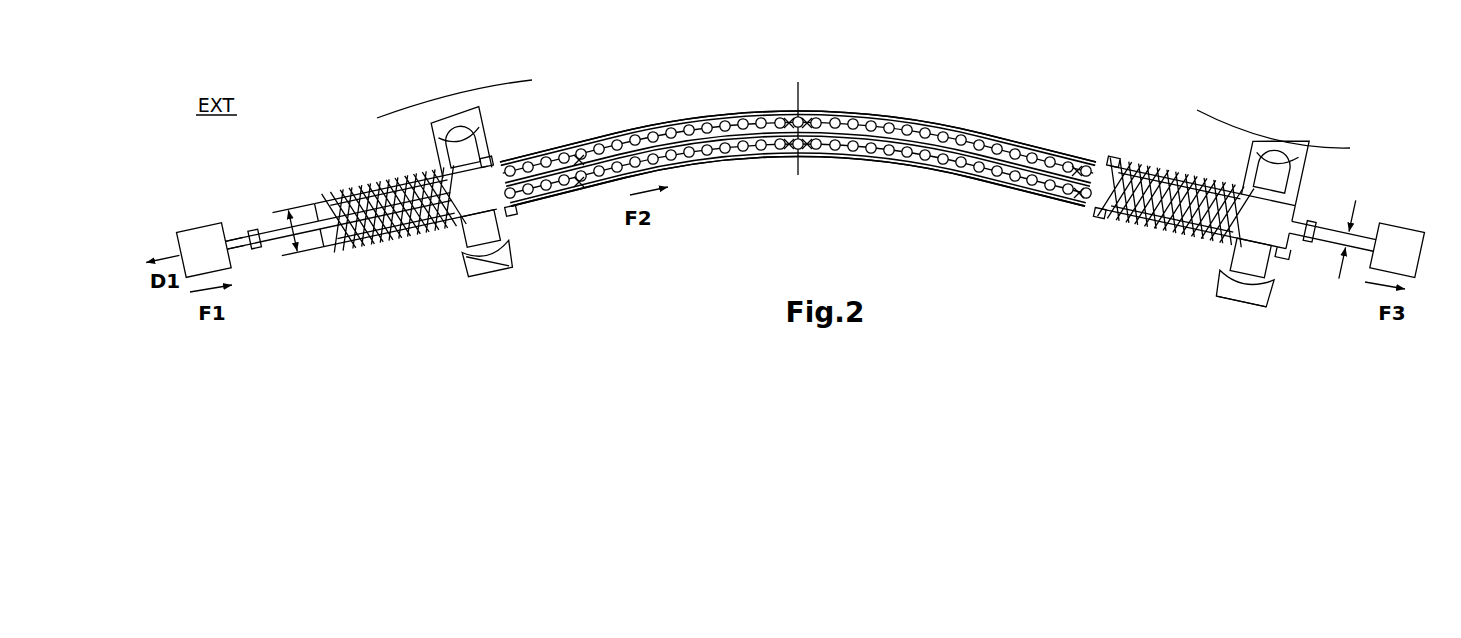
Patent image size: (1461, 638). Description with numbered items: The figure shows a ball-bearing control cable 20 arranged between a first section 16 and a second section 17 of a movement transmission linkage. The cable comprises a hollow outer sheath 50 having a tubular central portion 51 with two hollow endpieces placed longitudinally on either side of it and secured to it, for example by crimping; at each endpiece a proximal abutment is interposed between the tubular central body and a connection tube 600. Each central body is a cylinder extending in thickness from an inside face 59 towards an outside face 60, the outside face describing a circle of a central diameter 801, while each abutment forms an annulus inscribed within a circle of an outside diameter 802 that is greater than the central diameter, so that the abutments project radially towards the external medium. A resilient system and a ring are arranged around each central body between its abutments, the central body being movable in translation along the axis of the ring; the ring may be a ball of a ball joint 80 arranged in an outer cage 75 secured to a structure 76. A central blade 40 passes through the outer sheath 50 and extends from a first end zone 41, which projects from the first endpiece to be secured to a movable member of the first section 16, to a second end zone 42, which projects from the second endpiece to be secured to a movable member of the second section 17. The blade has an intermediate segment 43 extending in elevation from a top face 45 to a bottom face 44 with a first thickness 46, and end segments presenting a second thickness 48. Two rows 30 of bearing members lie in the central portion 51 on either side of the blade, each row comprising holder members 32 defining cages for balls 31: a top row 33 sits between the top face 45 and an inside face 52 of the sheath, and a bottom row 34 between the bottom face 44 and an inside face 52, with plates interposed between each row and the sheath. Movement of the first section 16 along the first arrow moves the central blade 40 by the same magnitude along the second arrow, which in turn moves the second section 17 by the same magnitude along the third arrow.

The first section 16 is at (186, 254).
The second section 17 is at (1397, 250).
The ball-bearing control cable 20 is at (1020, 123).
The row of bearing members 30 is at (927, 177).
The balls 31 is at (863, 153).
The holder members 32 is at (873, 152).
The top row 33 is at (913, 126).
The bottom row 34 is at (907, 166).
The central blade 40 is at (256, 260).
The first end zone 41 is at (232, 228).
The second end zone 42 is at (1357, 255).
The intermediate segment 43 is at (713, 133).
The bottom face 44 is at (763, 142).
The top face 45 is at (780, 113).
The first thickness 46 is at (800, 97).
The second thickness 48 is at (1360, 204).
The outer sheath 50 is at (628, 130).
The central portion 51 is at (720, 113).
The inside face 52 is at (1065, 200).
The inside face 59 is at (484, 140).
The outside face 60 is at (441, 177).
The outer cage 75 is at (475, 107).
The structure 76 is at (520, 96).
The ball joint 80 is at (517, 285).
The connection tube 600 is at (513, 204).
The central diameter 801 is at (388, 242).
The outside diameter 802 is at (288, 255).